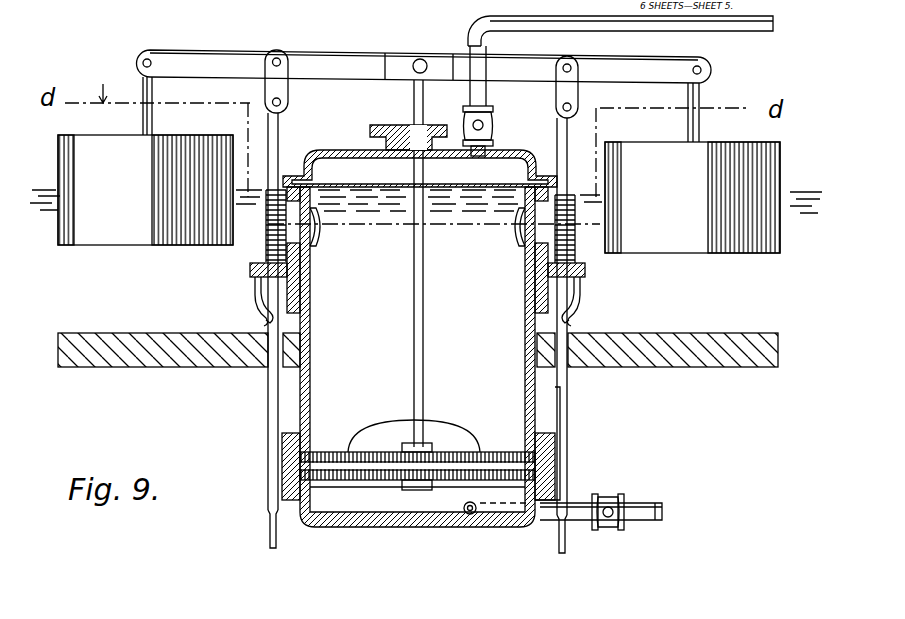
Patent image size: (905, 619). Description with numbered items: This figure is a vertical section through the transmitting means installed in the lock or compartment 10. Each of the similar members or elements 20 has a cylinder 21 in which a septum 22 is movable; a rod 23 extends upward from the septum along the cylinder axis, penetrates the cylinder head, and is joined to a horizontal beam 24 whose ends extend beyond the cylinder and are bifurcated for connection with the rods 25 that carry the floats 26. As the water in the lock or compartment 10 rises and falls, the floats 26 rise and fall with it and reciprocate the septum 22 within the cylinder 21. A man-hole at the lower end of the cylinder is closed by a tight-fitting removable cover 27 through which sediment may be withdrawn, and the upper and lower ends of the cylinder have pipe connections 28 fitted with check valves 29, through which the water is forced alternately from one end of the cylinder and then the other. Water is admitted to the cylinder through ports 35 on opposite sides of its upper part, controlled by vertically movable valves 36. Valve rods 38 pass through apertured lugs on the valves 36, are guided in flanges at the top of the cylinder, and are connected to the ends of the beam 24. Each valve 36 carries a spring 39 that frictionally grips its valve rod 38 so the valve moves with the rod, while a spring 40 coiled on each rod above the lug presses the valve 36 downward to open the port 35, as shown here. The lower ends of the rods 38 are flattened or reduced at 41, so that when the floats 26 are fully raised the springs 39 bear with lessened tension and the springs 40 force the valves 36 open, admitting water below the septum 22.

The lock or compartment 10 is at (418, 322).
The member or element of the transmitting means 20 is at (424, 46).
The cylinder 21 is at (420, 326).
The septum 22 is at (332, 452).
The rod 23 is at (424, 300).
The beam 24 is at (420, 55).
The rods 25 is at (153, 117).
The floats 26 is at (419, 194).
The cover 27 is at (450, 424).
The pipe connections 28 is at (770, 32).
The check valves 29 is at (494, 122).
The ports 35 is at (318, 236).
The valves 36 is at (302, 280).
The valve rods 38 is at (266, 405).
The spring 39 is at (253, 297).
The spring 40 is at (266, 230).
The flattened or reduced lower ends of the rods 41 is at (268, 534).